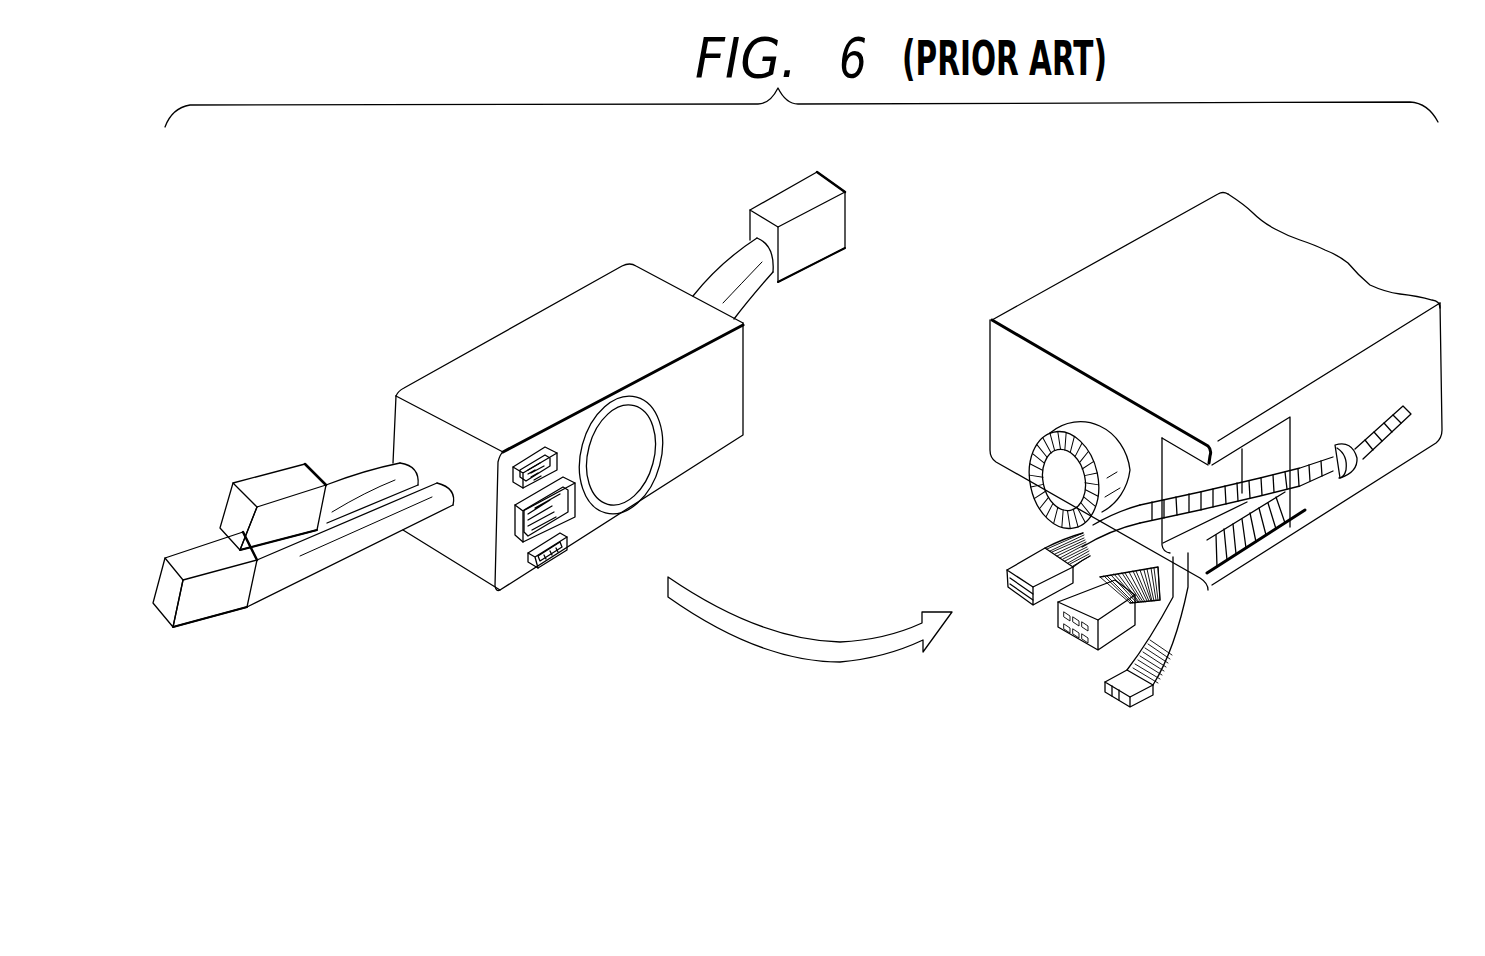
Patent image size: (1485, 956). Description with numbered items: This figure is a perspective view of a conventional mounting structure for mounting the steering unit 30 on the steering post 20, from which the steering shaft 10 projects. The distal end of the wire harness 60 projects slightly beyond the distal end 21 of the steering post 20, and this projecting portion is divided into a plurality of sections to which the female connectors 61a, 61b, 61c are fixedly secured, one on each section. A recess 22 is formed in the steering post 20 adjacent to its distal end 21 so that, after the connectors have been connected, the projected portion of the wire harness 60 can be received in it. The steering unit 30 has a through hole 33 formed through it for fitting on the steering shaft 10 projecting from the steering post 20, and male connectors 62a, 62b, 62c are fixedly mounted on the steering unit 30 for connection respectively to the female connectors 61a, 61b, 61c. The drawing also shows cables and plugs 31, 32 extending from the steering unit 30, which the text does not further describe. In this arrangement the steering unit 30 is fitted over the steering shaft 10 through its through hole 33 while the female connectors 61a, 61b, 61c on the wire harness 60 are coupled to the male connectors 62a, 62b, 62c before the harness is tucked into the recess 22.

The steering shaft 10 is at (1085, 430).
The steering post 20 is at (1118, 240).
The distal end of the steering post 21 is at (1000, 355).
The recess 22 is at (1250, 465).
The steering unit 30 is at (503, 330).
The cables with plugs 31 is at (310, 573).
The cable with plug 32 is at (760, 277).
The through hole 33 is at (625, 475).
The wire harness 60 is at (1193, 617).
The female connector 61a is at (1017, 600).
The female connector 61b is at (1077, 640).
The female connector 61c is at (1120, 703).
The male connector 62a is at (513, 487).
The male connector 62b is at (520, 522).
The male connector 62c is at (532, 556).